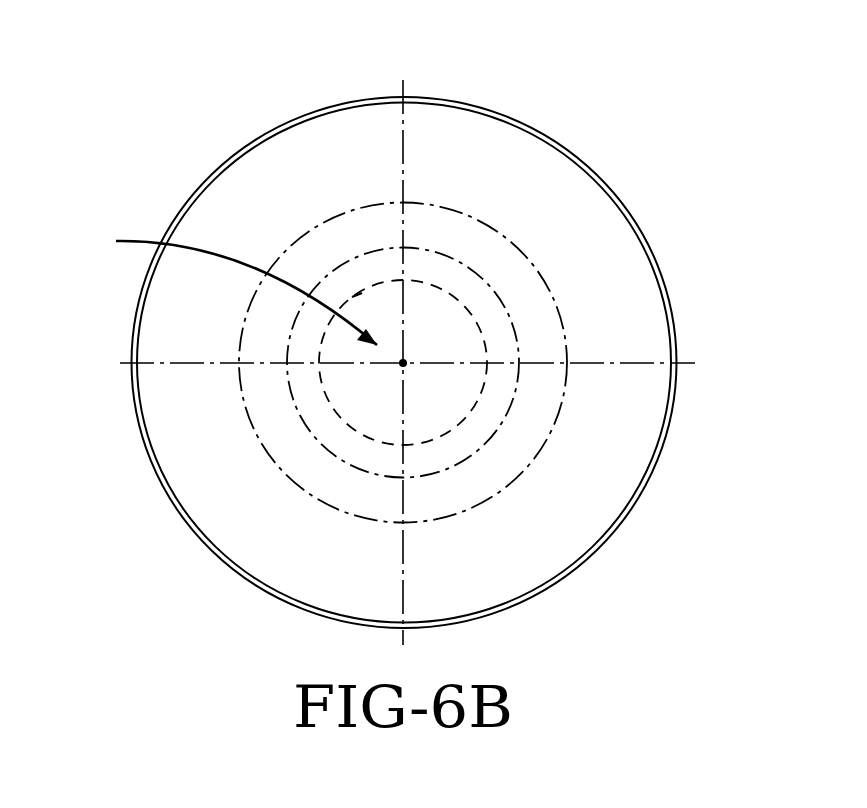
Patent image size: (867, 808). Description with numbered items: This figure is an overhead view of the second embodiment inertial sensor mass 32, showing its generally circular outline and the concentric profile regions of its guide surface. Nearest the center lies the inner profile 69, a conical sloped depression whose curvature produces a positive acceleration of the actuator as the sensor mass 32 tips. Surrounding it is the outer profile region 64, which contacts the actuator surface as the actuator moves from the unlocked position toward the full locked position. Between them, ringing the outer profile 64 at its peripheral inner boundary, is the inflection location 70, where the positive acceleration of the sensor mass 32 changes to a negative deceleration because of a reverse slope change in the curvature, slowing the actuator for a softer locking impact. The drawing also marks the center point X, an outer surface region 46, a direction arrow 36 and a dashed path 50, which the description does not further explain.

The inertial sensor mass 32 is at (177, 511).
The disc surface 46 is at (210, 423).
The outer profile region 64 is at (450, 208).
The inflection location 70 is at (467, 267).
The inner profile 69 is at (453, 313).
The center point / axis X is at (403, 363).
The radial direction arrow 36 is at (228, 285).
The path of element 50 is at (357, 295).